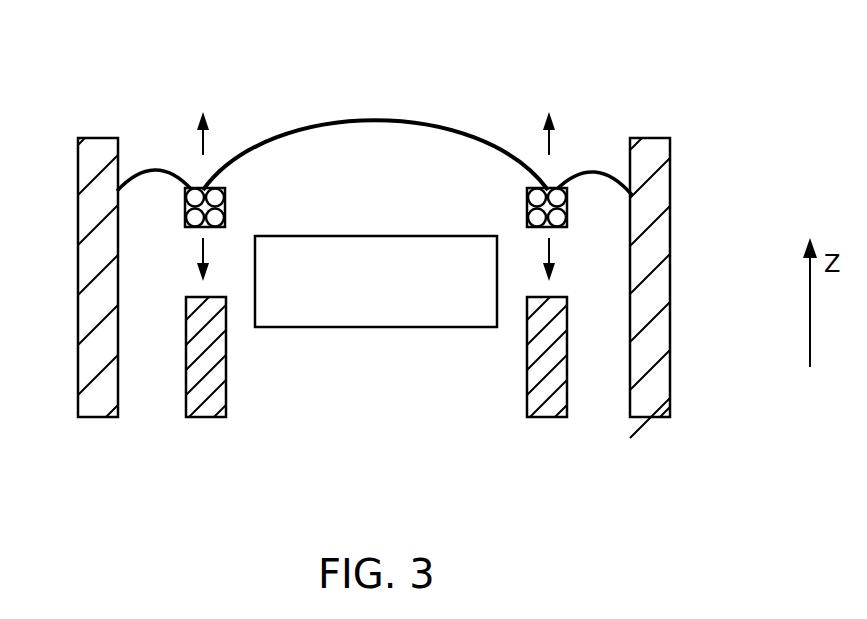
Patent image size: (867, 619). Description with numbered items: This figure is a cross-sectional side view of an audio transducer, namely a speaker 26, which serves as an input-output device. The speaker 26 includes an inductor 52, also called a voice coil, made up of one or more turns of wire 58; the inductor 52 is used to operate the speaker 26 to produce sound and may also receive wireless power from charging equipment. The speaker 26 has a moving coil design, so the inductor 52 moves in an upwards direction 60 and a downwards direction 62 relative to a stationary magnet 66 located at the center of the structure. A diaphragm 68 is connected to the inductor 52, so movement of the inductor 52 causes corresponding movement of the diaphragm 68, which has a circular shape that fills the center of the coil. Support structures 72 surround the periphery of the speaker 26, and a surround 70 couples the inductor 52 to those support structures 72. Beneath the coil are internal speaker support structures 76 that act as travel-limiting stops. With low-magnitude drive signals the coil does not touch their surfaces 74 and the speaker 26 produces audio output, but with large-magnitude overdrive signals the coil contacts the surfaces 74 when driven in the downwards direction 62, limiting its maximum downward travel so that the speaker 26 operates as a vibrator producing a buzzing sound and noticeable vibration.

The speaker 26 is at (708, 72).
The inductor 52 is at (238, 208).
The wire 58 is at (226, 192).
The upwards direction 60 is at (208, 135).
The downwards direction 62 is at (203, 252).
The magnet 66 is at (398, 328).
The diaphragm 68 is at (381, 120).
The surround 70 is at (159, 170).
The support structures 72 is at (86, 312).
The surfaces 74 is at (215, 297).
The internal speaker support structures 76 is at (209, 418).